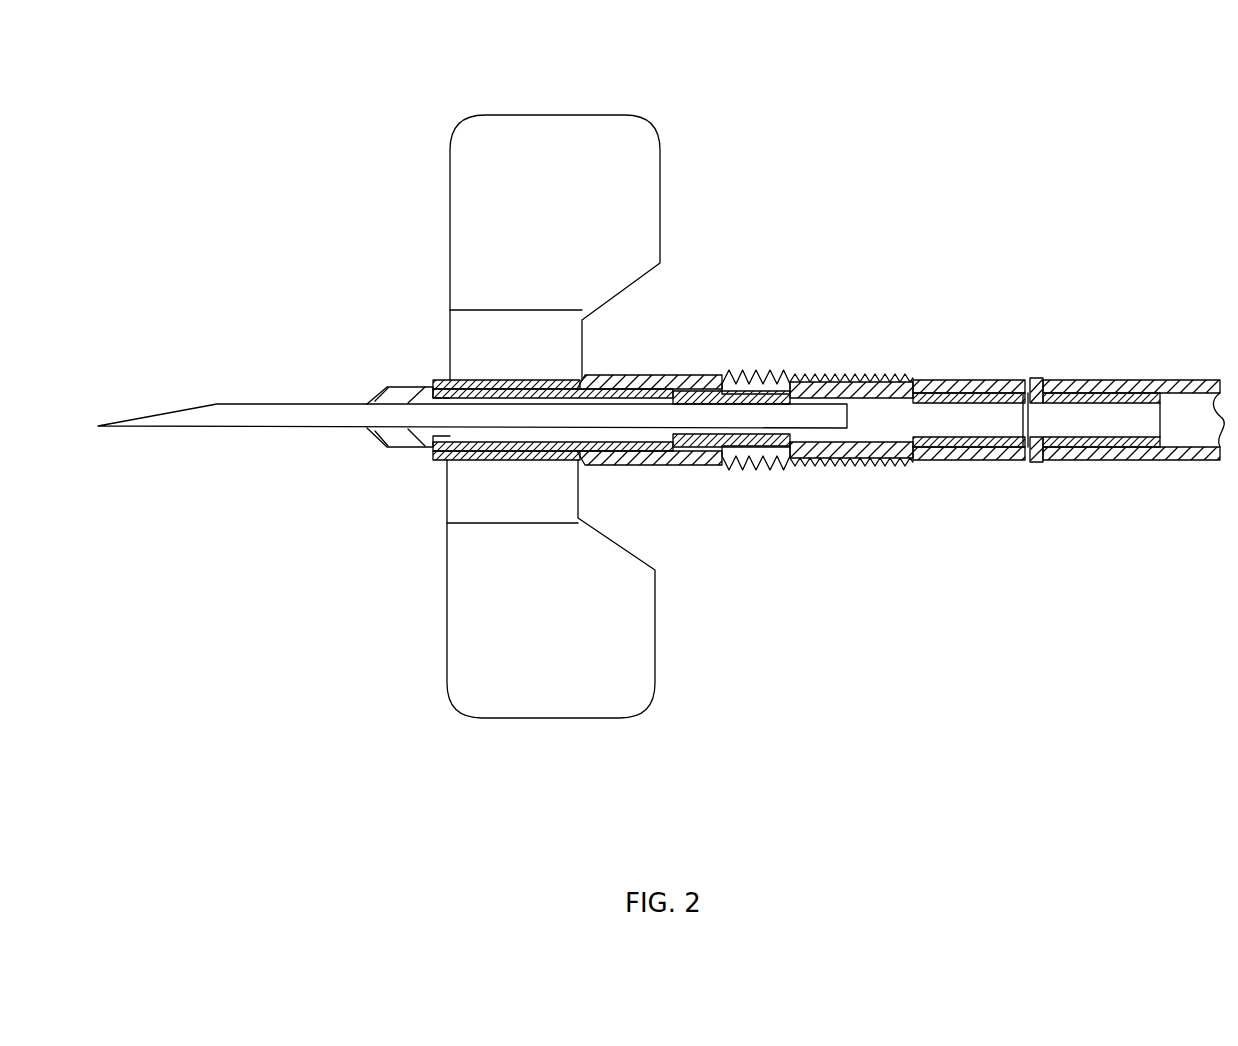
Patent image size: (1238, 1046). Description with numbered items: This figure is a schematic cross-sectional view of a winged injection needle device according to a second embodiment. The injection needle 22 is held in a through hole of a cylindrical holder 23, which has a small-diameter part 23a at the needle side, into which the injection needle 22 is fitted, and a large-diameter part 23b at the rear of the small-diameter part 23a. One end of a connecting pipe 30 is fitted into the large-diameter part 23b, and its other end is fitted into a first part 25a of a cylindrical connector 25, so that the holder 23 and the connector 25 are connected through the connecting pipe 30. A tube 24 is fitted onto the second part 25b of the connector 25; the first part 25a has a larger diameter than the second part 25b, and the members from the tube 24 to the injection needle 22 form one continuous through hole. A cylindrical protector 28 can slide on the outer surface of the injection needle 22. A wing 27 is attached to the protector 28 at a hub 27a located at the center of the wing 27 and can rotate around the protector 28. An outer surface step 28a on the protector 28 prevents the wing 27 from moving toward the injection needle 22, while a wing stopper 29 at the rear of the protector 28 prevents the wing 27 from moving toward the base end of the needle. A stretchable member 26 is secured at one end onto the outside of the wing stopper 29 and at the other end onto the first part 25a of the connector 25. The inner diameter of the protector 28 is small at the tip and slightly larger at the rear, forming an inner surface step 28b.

The injection needle 22 is at (216, 426).
The cylindrical holder 23 is at (800, 475).
The small-diameter part 23a is at (724, 462).
The large-diameter part 23b is at (870, 464).
The tube 24 is at (1070, 382).
The cylindrical connector 25 is at (1055, 422).
The first part 25a is at (1002, 462).
The second part 25b is at (1128, 458).
The stretchable member 26 is at (790, 374).
The wing 27 is at (656, 152).
The hub 27a is at (474, 462).
The cylindrical protector 28 is at (373, 401).
The outer surface step 28a is at (432, 386).
The inner surface step 28b is at (402, 442).
The wing stopper 29 is at (652, 377).
The connecting pipe 30 is at (940, 458).